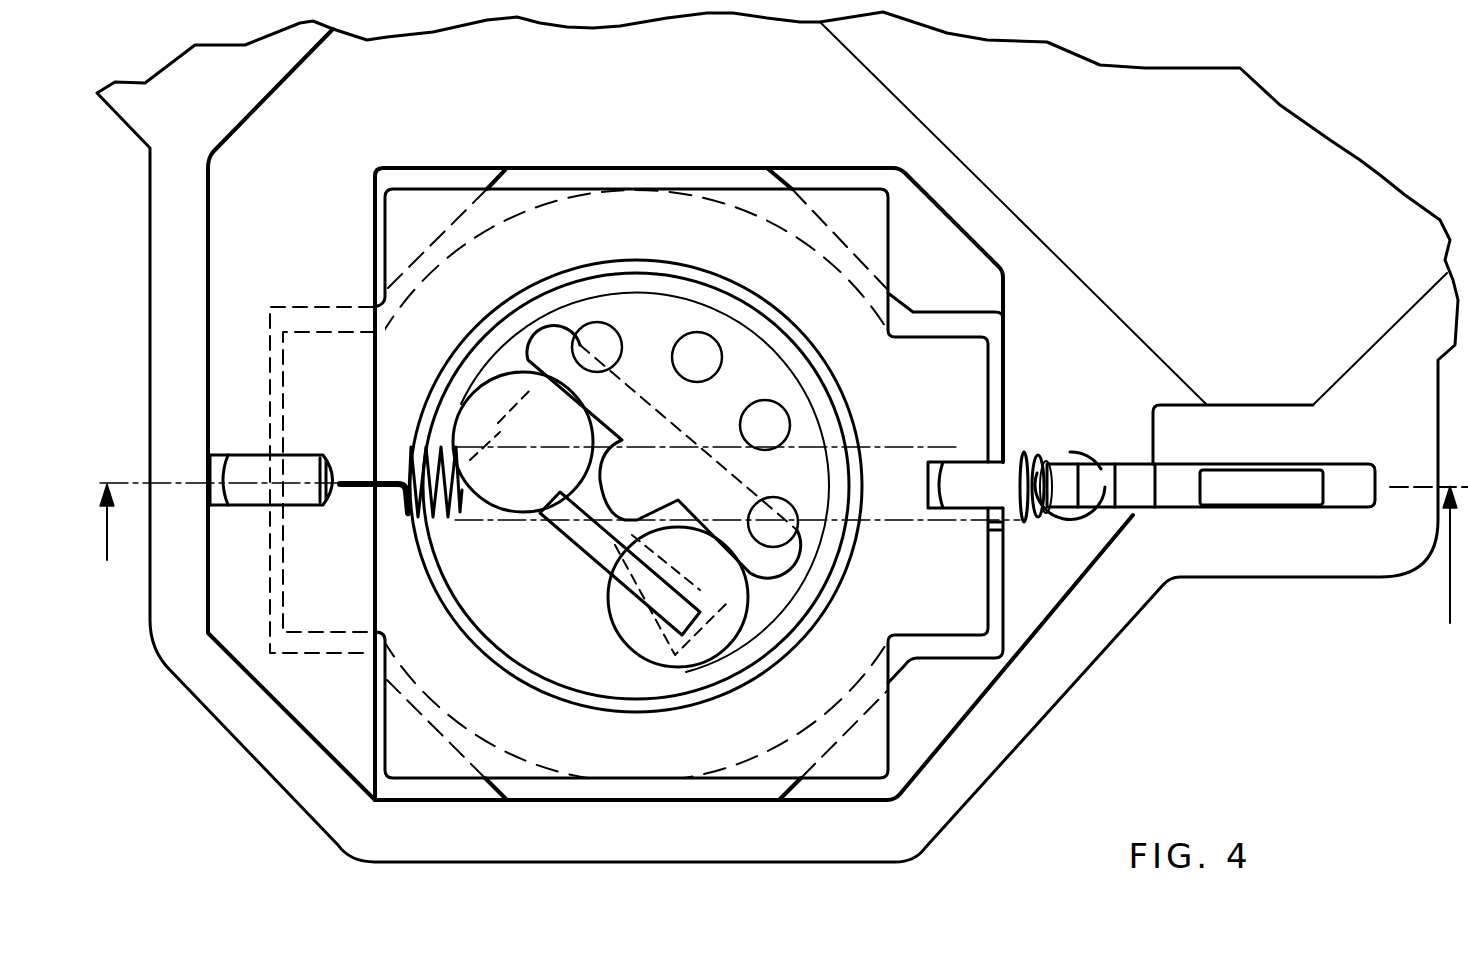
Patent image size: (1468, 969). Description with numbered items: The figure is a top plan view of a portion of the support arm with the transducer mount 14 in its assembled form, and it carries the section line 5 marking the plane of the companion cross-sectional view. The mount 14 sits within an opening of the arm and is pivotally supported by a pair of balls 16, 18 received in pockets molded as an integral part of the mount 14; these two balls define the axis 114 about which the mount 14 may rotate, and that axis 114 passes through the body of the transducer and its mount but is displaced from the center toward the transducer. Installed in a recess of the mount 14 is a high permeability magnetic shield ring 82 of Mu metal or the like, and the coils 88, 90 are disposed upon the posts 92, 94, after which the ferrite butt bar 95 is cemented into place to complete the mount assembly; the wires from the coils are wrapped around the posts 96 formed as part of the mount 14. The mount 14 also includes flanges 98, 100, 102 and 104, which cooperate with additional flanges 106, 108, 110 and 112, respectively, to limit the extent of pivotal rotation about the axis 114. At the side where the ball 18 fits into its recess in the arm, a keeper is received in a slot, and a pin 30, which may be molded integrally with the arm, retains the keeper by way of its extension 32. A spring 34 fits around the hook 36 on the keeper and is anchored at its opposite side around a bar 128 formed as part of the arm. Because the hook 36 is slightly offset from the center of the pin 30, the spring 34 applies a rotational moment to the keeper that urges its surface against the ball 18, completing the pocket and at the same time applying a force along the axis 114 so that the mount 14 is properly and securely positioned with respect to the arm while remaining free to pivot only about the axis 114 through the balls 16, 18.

The section line 5- 5 is at (781, 556).
The transducer mount 14 is at (630, 203).
The ball 16 is at (250, 492).
The ball 18 is at (1000, 438).
The pin 30 is at (1190, 490).
The extension 32 is at (1275, 485).
The spring 34 is at (1028, 455).
The hook 36 is at (1100, 487).
The magnetic shield ring 82 is at (600, 271).
The coil 88 is at (507, 512).
The coil 90 is at (633, 620).
The post 92 is at (535, 380).
The post 94 is at (653, 580).
The butt bar 95 is at (533, 430).
The posts 96 is at (697, 345).
The flange 98 is at (857, 210).
The flange 100 is at (870, 763).
The flange 102 is at (423, 760).
The flange 104 is at (438, 200).
The flange 106 is at (935, 292).
The flange 108 is at (940, 713).
The flange 110 is at (395, 790).
The flange 112 is at (400, 177).
The axis 114 is at (237, 478).
The bar 128 is at (360, 490).